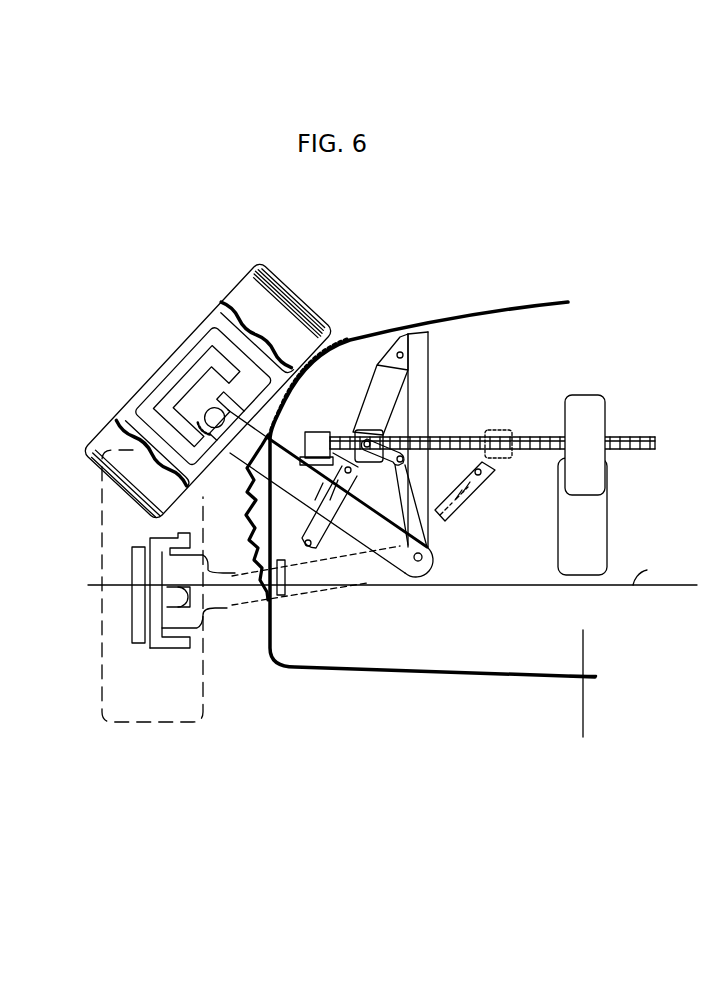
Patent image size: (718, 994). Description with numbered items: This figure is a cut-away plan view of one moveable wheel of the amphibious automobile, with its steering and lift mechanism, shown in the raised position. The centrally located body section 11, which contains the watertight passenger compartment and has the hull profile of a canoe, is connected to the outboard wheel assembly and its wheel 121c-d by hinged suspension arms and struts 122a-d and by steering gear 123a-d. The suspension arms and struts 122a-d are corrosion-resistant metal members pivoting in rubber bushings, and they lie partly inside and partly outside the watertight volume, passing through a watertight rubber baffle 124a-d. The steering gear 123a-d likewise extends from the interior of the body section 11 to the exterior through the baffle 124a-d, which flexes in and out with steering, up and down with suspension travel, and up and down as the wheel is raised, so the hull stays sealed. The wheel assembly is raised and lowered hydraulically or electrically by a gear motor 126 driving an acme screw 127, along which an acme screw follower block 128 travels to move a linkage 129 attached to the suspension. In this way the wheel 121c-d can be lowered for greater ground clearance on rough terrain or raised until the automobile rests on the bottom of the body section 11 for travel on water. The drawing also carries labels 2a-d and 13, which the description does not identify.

The centrally located body section 11 is at (489, 360).
The pivot 13 is at (428, 558).
The seats 2a-d is at (208, 391).
The wheels 121c-d is at (250, 280).
The hinged suspension arms and struts 122a-d is at (362, 520).
The steering gear 123a-d is at (162, 650).
The watertight rubber baffle 124a-d is at (382, 378).
The gear motor 126 is at (588, 407).
The acme screw 127 is at (638, 437).
The acme screw follower block 128 is at (366, 428).
The linkage 129 is at (434, 496).